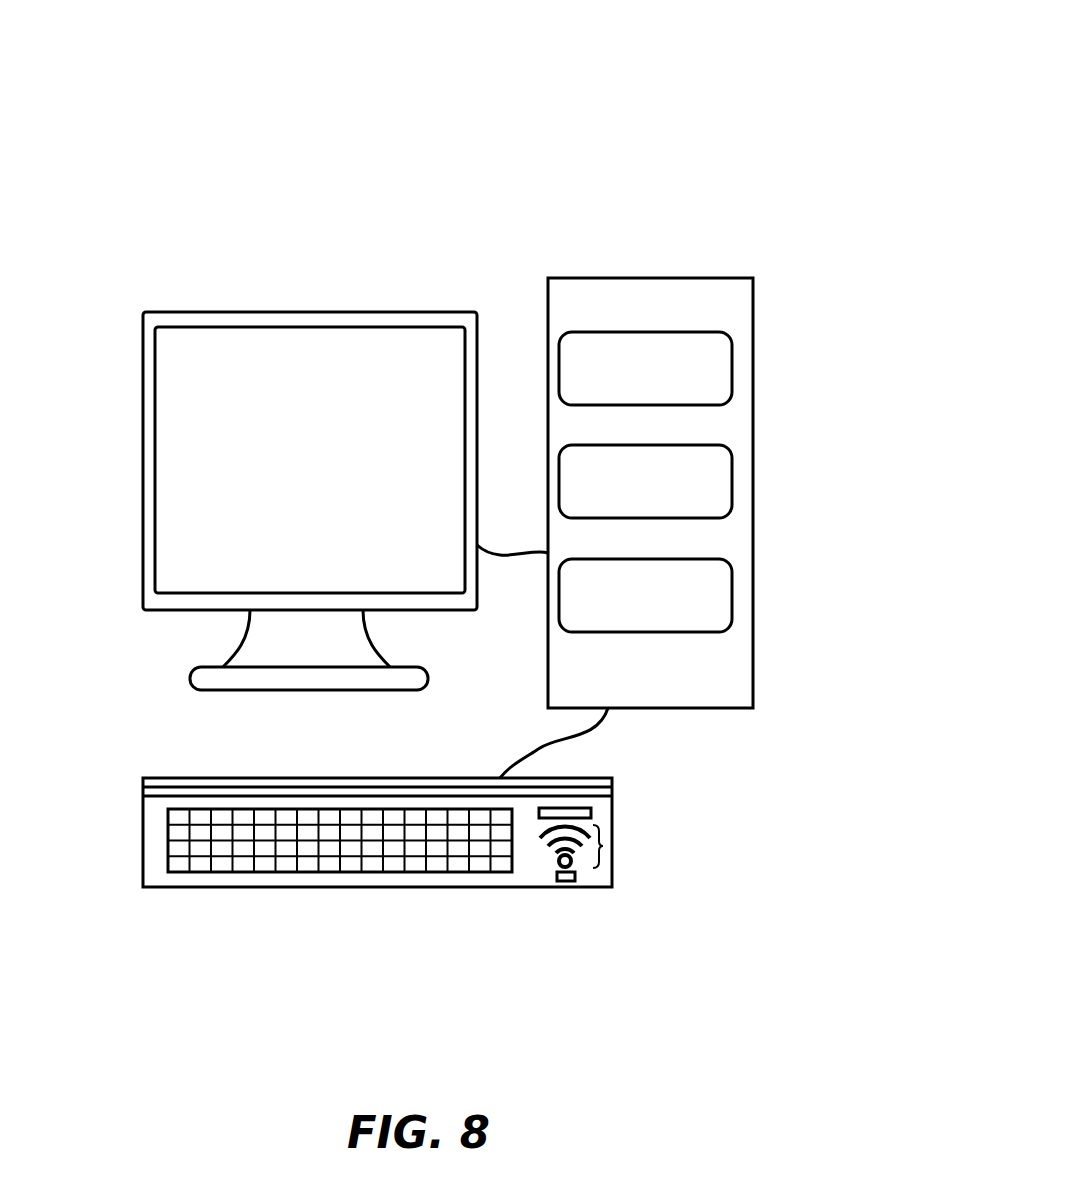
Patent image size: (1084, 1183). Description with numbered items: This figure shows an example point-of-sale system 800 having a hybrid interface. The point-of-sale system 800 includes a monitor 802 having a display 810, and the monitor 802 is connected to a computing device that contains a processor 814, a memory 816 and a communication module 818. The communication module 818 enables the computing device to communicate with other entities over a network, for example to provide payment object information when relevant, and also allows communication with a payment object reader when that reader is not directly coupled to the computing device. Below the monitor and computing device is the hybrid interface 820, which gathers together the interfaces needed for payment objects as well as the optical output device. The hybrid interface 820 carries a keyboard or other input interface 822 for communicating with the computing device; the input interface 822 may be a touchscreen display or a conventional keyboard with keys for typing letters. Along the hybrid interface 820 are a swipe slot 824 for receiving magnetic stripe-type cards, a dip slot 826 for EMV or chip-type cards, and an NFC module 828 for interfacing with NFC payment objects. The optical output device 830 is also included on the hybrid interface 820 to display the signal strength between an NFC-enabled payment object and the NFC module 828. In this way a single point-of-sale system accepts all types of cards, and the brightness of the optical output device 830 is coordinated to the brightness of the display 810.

The point-of-sale system 800 is at (656, 84).
The monitor 802 is at (184, 311).
The display 810 is at (331, 473).
The processor 814 is at (734, 370).
The memory 816 is at (734, 482).
The communication module 818 is at (734, 594).
The hybrid interface 820 is at (141, 874).
The input interface 822 is at (166, 840).
The swipe slot 824 is at (615, 791).
The dip slot 826 is at (596, 813).
The NFC module 828 is at (578, 879).
The optical output device 830 is at (604, 846).